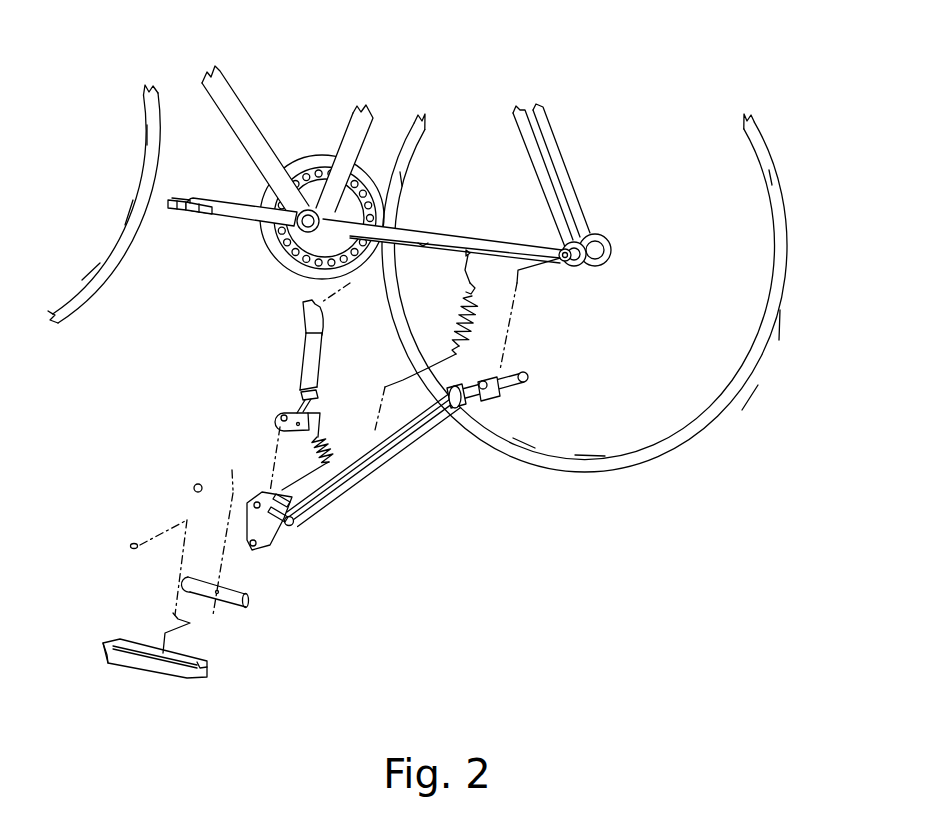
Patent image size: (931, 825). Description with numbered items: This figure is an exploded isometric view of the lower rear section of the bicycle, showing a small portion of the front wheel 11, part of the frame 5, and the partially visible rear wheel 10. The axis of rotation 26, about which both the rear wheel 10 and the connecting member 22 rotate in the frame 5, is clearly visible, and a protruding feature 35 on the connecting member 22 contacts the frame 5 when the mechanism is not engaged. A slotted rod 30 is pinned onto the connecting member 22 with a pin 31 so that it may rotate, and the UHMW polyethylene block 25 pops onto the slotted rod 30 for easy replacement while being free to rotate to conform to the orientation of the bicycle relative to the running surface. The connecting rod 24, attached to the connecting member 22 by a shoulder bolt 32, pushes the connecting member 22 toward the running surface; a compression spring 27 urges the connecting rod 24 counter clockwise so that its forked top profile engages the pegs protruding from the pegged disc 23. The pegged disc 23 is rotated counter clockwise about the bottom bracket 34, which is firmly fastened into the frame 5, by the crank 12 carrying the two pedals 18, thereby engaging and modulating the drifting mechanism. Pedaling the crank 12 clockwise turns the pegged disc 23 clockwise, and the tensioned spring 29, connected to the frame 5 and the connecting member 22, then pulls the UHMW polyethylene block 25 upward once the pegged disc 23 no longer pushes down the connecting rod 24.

The frame 5 is at (363, 118).
The rear wheel 10 is at (695, 427).
The front wheel 11 is at (127, 240).
The crank 12 is at (258, 210).
The pedals 18 is at (182, 198).
The connecting member 22 is at (400, 450).
The pegged disc 23 is at (305, 260).
The connecting rod 24 is at (303, 365).
The UHMW polyethylene block 25 is at (202, 668).
The axis of rotation 26 is at (567, 247).
The compression spring 27 is at (317, 447).
The tensioned spring 29 is at (472, 322).
The slotted rod 30 is at (247, 590).
The pin 31 is at (131, 547).
The shoulder bolt 32 is at (194, 488).
The bottom bracket 34 is at (313, 205).
The protruding feature 35 is at (457, 403).